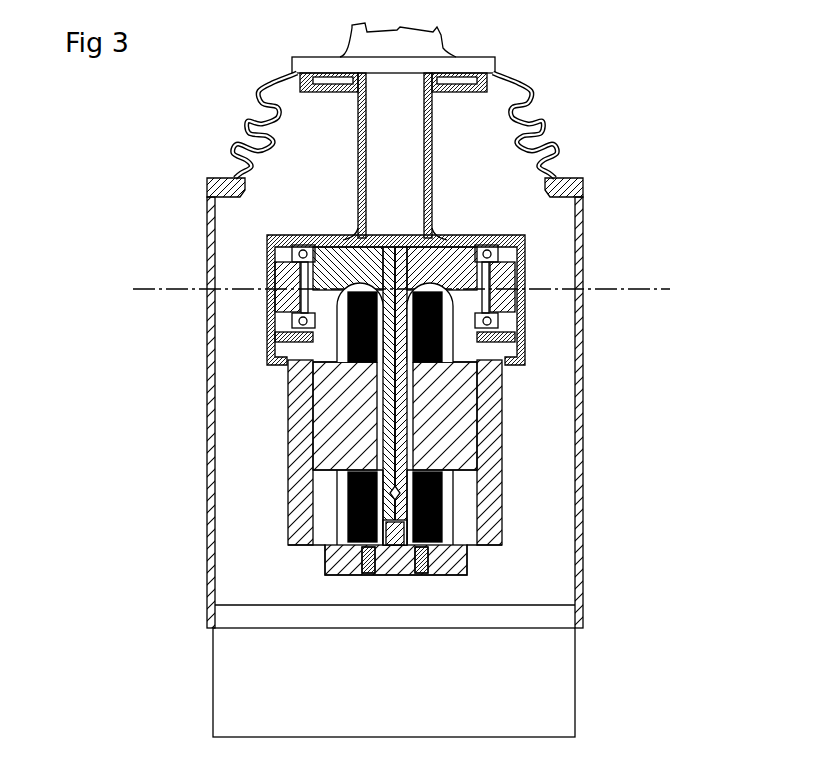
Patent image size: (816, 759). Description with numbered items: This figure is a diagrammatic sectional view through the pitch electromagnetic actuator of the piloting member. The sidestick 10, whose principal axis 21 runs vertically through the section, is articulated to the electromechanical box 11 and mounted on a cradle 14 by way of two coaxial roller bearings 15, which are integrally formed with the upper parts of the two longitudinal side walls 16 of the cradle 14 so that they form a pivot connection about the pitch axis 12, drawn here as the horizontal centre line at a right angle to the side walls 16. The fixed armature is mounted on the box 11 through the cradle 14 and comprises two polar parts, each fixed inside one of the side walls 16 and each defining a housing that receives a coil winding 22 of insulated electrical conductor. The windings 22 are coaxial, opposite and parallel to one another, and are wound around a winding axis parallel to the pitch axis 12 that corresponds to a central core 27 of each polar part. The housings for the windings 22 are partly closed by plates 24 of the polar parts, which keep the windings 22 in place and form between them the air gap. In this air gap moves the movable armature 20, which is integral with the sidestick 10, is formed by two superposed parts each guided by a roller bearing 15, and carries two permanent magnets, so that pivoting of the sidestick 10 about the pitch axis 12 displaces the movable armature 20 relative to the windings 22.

The sidestick 10 is at (432, 48).
The electromechanical box 11 is at (578, 520).
The pitch axis 12 is at (625, 289).
The cradle 14 is at (343, 566).
The roller bearings 15 is at (292, 322).
The side walls 16 is at (300, 441).
The movable armature 20 is at (393, 376).
The principal axis 21 is at (408, 155).
The coil winding 22 is at (352, 330).
The plates 24 is at (382, 442).
The central core 27 is at (373, 422).